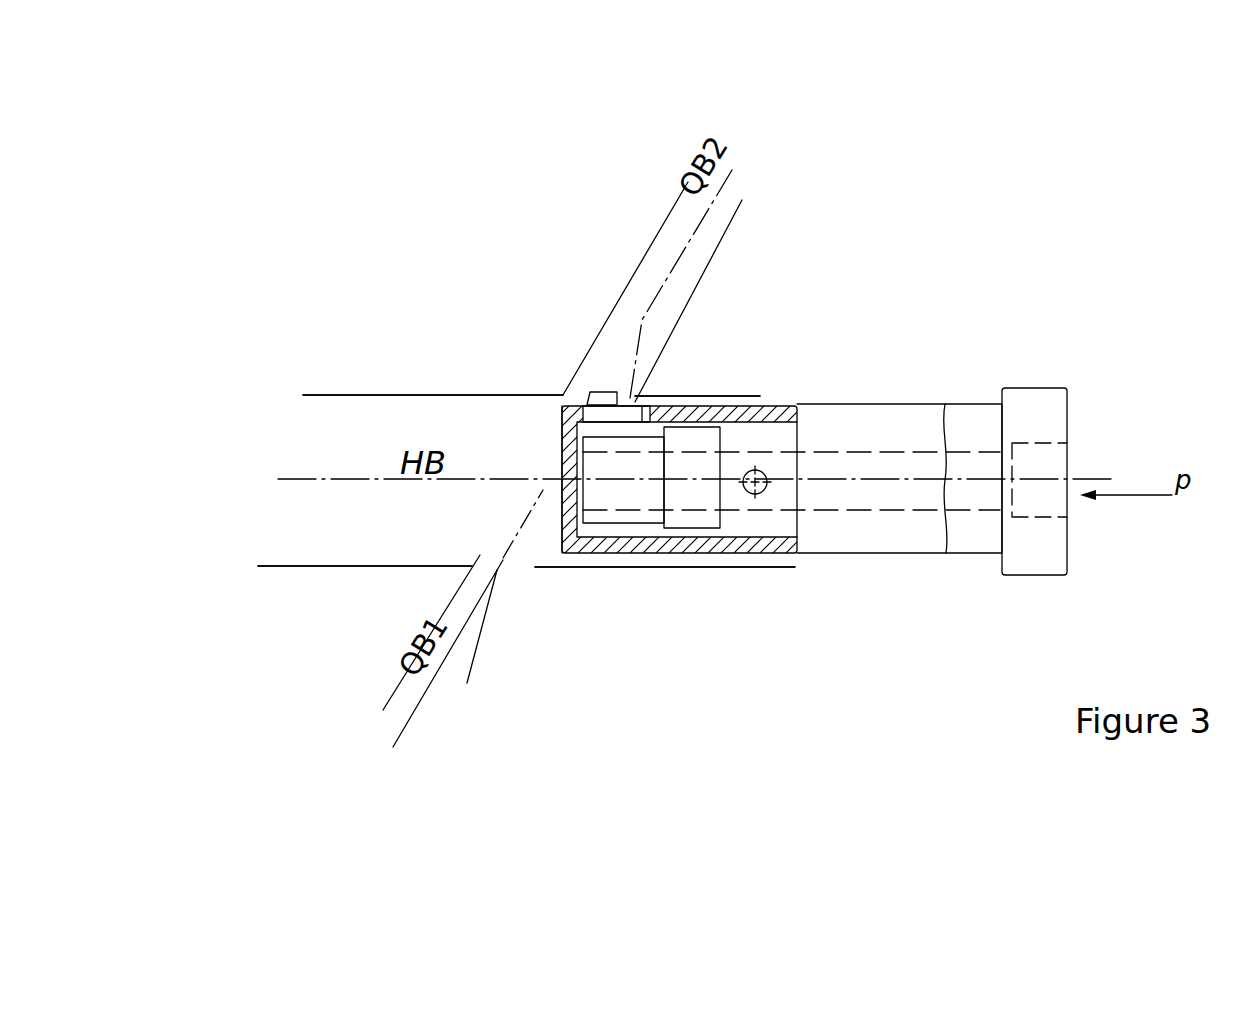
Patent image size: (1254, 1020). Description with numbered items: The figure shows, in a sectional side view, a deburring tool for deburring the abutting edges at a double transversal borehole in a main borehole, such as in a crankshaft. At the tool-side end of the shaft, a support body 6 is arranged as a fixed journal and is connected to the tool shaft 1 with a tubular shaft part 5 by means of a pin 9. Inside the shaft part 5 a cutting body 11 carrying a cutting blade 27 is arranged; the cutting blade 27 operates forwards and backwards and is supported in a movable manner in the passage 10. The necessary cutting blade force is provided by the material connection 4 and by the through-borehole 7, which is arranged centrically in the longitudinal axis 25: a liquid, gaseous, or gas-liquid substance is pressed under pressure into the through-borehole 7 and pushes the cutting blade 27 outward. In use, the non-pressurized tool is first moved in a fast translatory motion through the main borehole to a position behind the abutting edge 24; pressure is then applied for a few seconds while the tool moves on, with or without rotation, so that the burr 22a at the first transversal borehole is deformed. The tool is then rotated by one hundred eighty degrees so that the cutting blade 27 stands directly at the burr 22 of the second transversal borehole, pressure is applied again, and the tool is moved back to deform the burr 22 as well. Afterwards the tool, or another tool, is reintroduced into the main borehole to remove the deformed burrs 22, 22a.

The tool shaft 1 is at (880, 547).
The material connection 4 is at (1043, 465).
The tubular shaft part 5 is at (768, 405).
The support body 6 is at (608, 517).
The through-borehole 7 is at (985, 470).
The pin 9 is at (755, 495).
The passage 10 is at (583, 405).
The cutting body 11 is at (632, 402).
The burr 22 is at (632, 402).
The burr 22a is at (482, 555).
The abutting edge 24 is at (535, 567).
The longitudinal axis 25 is at (290, 478).
The cutting blade 27 is at (600, 400).